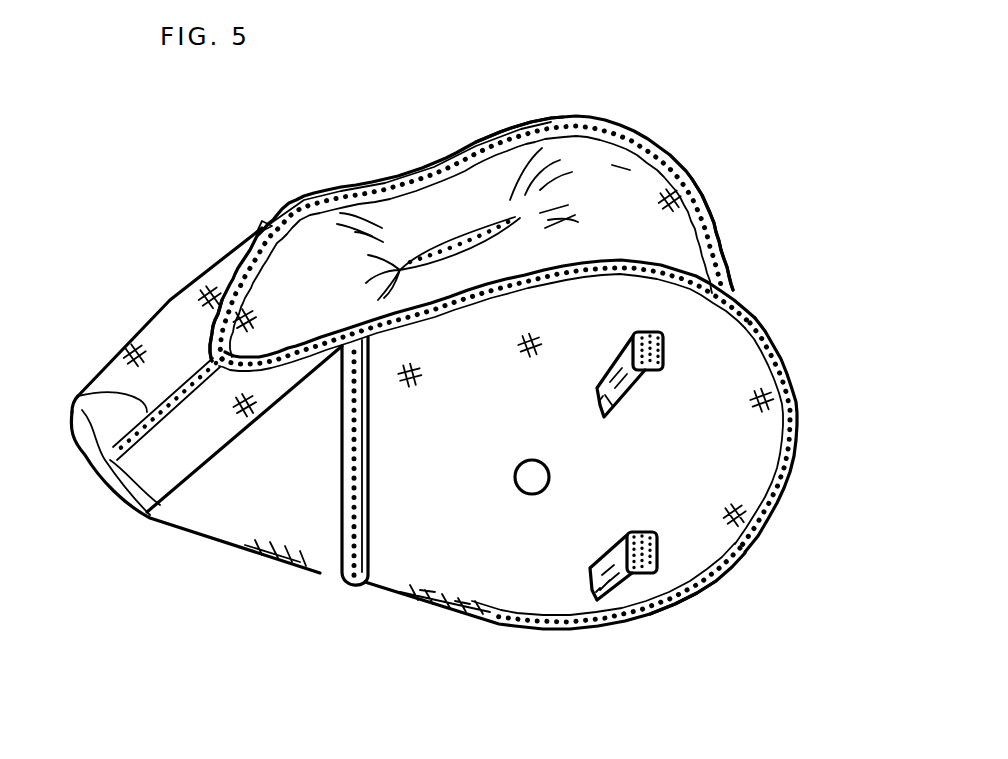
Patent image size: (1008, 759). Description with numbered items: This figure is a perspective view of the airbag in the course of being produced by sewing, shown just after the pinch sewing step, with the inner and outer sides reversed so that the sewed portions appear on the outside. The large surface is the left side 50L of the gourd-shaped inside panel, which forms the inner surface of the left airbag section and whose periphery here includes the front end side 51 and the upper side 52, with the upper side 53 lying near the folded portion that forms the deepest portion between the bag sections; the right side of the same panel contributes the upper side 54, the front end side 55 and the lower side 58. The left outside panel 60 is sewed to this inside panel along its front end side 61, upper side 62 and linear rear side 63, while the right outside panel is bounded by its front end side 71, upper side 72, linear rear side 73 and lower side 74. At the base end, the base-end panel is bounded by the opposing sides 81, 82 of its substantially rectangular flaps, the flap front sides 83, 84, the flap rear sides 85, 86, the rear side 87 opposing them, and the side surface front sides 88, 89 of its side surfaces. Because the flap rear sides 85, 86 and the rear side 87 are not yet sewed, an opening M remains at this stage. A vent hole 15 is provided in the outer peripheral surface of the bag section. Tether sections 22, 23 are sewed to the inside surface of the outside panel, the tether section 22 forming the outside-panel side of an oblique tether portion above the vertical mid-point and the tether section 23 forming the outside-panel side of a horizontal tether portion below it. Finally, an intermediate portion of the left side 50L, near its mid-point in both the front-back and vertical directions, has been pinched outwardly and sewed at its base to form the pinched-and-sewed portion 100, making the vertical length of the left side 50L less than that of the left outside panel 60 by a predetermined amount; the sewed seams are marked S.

The vent hole 15 is at (515, 478).
The tether section 22 is at (625, 377).
The tether section 23 is at (596, 548).
The left side of inside panel 50L is at (493, 226).
The front end side 51 is at (750, 234).
The upper side 52 is at (471, 226).
The upper side 53 is at (192, 344).
The upper side 54 is at (487, 282).
The front end side 55 is at (823, 435).
The lower side 58 is at (557, 608).
The left outside panel 60 is at (467, 136).
The front end side 61 is at (721, 240).
The upper side 62 is at (423, 177).
The linear rear side 63 is at (206, 206).
The front end side 71 is at (800, 418).
The upper side 72 is at (600, 262).
The linear rear side 73 is at (443, 458).
The lower side 74 is at (565, 630).
The flap side 81 is at (148, 320).
The flap side 82 is at (95, 385).
The flap front side 83 is at (148, 344).
The flap front side 84 is at (287, 345).
The flap rear side 85 is at (72, 417).
The flap rear side 86 is at (157, 507).
The rear side 87 is at (97, 480).
The side surface front side 88 is at (258, 228).
The side surface front side 89 is at (368, 433).
The pinched-and-sewed portion 100 is at (458, 267).
The opening M is at (100, 465).
The stitch seam S is at (322, 203).